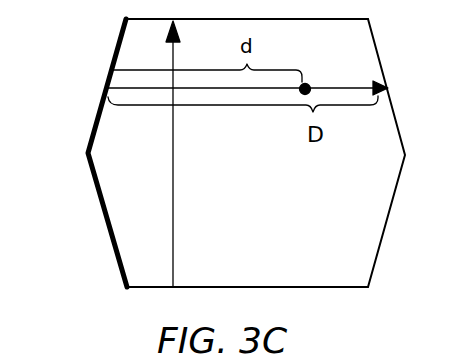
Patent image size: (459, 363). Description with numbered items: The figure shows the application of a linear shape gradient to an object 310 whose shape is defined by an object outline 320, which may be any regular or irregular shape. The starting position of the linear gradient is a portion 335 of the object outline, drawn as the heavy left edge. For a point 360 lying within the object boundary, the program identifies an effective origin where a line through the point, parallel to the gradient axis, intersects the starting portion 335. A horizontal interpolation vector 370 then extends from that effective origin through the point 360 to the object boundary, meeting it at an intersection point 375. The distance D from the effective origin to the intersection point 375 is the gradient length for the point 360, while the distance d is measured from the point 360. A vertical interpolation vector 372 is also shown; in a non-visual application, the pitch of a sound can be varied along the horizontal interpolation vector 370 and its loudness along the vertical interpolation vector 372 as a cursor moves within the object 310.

The object 310 is at (226, 187).
The object outline 320 is at (386, 220).
The portion of the object outline 335 is at (93, 122).
The point 360 is at (305, 83).
The interpolation vector 370 is at (247, 89).
The interpolation vector 372 is at (173, 227).
The intersection point 375 is at (389, 88).